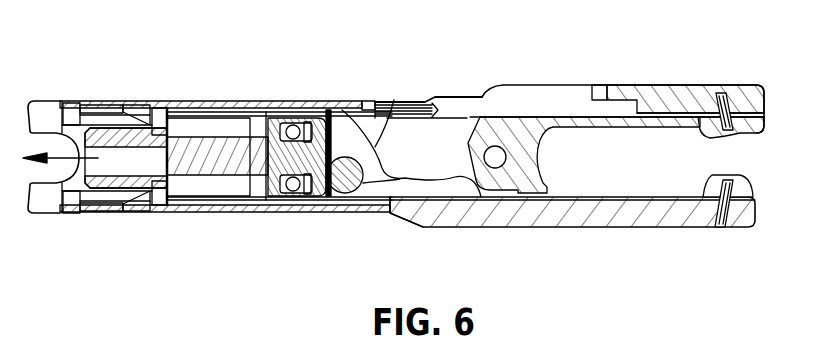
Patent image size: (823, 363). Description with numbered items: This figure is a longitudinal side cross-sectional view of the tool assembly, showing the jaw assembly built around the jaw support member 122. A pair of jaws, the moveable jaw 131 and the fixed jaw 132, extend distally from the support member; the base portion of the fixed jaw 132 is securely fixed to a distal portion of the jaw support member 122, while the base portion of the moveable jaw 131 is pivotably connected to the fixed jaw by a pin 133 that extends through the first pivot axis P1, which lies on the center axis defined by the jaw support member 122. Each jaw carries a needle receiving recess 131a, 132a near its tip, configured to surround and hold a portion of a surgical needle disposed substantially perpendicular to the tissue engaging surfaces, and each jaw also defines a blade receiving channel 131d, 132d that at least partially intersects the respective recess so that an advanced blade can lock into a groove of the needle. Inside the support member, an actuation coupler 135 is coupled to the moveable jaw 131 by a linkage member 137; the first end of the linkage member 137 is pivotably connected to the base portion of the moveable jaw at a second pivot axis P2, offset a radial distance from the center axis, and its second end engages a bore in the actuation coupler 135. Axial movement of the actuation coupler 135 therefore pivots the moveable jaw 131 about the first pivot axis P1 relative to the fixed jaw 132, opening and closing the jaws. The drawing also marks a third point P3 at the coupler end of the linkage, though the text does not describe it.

The jaw support member 122 is at (300, 99).
The moveable jaw 131 is at (658, 92).
The needle receiving recess 131a is at (730, 138).
The blade receiving channel 131d is at (704, 98).
The fixed jaw 132 is at (590, 217).
The needle receiving recess 132a is at (720, 176).
The blade receiving channel 132d is at (686, 197).
The pin 133 is at (477, 98).
The actuation coupler 135 is at (394, 99).
The linkage member 137 is at (407, 192).
The first pivot axis P1 is at (495, 157).
The second pivot axis P2 is at (470, 195).
The pivot point P3 is at (347, 177).